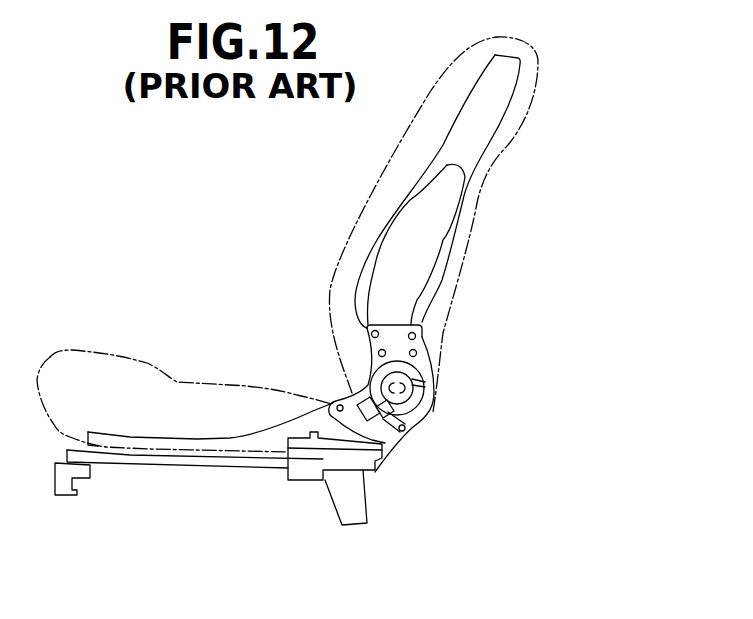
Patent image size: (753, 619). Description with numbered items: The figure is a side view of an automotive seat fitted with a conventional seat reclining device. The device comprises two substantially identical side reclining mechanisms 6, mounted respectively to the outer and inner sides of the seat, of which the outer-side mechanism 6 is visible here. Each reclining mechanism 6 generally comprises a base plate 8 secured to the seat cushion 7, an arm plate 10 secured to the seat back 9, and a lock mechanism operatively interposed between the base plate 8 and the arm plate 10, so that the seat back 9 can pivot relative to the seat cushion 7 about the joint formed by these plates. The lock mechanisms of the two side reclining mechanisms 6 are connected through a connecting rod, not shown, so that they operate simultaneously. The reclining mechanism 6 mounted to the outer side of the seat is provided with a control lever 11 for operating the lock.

The side reclining mechanism 6 is at (447, 415).
The seat cushion 7 is at (163, 418).
The base plate 8 is at (386, 421).
The seat back 9 is at (455, 240).
The arm plate 10 is at (422, 345).
The control lever 11 is at (315, 445).